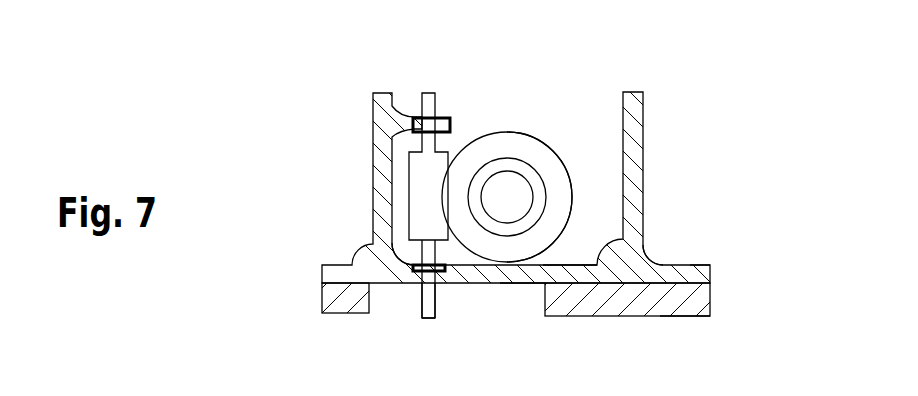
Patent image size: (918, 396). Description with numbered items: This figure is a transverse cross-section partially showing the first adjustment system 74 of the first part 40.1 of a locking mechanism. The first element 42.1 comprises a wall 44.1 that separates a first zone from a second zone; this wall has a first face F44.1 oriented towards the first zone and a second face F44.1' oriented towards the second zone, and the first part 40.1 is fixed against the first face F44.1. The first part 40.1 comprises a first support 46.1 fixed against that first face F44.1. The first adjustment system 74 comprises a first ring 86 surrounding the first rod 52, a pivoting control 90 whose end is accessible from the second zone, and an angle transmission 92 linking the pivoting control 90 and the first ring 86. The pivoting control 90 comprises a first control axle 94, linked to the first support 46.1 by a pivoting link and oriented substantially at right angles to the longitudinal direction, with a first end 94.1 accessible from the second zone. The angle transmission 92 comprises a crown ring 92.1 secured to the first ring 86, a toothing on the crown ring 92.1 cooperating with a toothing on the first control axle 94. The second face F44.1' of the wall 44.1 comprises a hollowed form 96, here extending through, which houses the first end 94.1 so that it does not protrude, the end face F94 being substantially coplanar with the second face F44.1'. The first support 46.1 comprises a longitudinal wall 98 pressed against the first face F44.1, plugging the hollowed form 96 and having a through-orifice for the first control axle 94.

The first part 40.1 is at (652, 125).
The first element 42.1 is at (314, 301).
The wall 44.1 is at (688, 293).
The first face F44.1 is at (742, 260).
The second face F44.1' is at (733, 331).
The first support 46.1 is at (651, 265).
The first rod 52 is at (521, 172).
The first adjustment system 74 is at (521, 124).
The first ring 86 is at (494, 150).
The pivoting control 90 is at (403, 254).
The angle transmission 92 is at (456, 132).
The crown ring 92.1 is at (570, 176).
The first control axle 94 is at (419, 177).
The first end 94.1 is at (418, 293).
The end face F94 is at (429, 319).
The hollowed form 96 is at (516, 300).
The longitudinal wall 98 is at (544, 266).